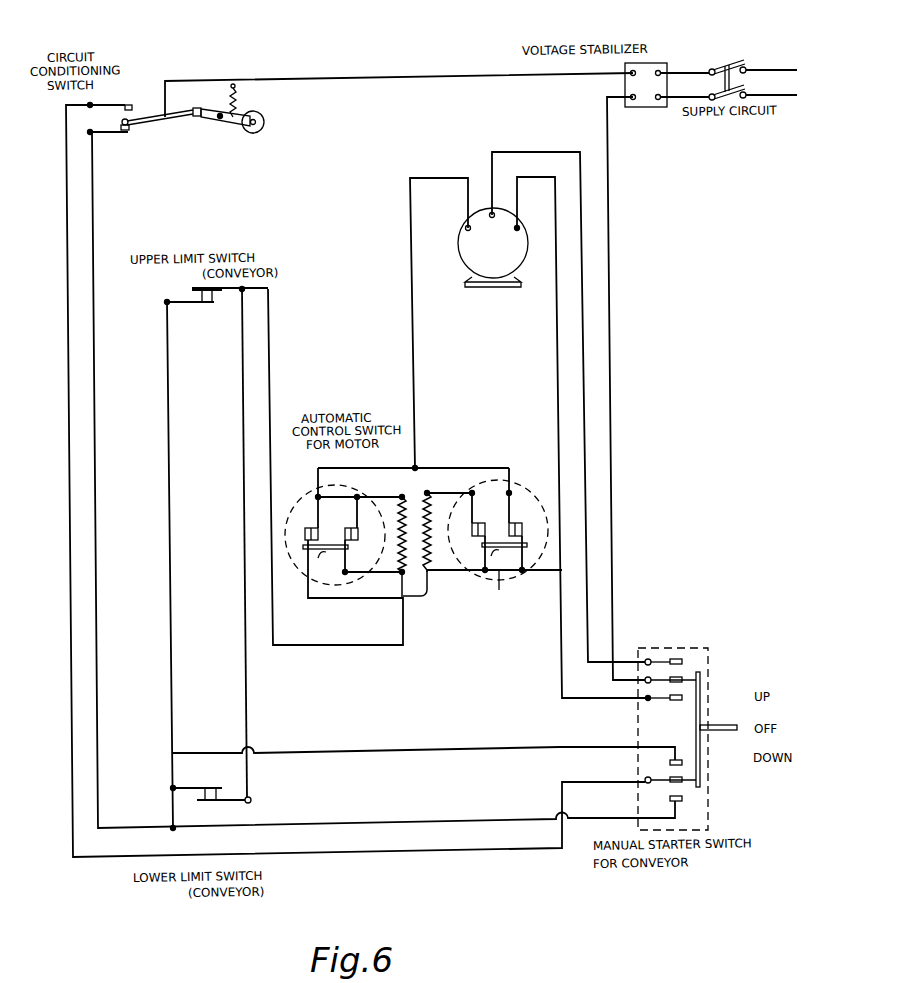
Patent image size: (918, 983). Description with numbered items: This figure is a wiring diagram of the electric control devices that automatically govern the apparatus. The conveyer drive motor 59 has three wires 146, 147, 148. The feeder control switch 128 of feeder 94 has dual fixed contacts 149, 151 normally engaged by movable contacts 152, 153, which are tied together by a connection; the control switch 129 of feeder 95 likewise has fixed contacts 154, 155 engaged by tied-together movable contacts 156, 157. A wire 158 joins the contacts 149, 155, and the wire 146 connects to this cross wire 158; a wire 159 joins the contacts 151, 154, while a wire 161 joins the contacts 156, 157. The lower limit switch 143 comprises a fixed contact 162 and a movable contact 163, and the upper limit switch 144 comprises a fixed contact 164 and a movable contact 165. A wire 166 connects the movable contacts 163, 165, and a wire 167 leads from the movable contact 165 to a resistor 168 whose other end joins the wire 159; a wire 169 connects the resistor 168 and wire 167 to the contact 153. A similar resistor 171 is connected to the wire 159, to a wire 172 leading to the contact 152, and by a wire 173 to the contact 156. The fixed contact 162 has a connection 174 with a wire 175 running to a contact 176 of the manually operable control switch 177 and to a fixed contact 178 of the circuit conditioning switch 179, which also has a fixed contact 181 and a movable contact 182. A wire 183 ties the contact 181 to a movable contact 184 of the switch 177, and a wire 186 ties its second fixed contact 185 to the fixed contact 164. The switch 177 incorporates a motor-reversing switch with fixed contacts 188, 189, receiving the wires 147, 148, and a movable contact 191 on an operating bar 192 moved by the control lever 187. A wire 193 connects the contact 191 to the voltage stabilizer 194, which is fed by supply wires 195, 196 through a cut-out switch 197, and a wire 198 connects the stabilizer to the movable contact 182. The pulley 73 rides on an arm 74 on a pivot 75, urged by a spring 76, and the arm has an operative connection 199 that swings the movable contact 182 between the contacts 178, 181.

The conveyer drive motor 59 is at (497, 266).
The pulley 73 is at (264, 121).
The arm 74 is at (244, 130).
The pivot 75 is at (220, 119).
The spring 76 is at (238, 102).
The feeder 94 is at (321, 668).
The feeder 95 is at (462, 626).
The feeder control switch 128 is at (293, 506).
The control switch 129 is at (518, 580).
The lower limit switch 143 is at (193, 782).
The upper limit switch 144 is at (210, 304).
The wire 146 is at (450, 176).
The wire 147 is at (521, 152).
The wire 148 is at (537, 178).
The fixed contact 149 is at (320, 520).
The fixed contact 151 is at (357, 536).
The movable contact 152 is at (304, 549).
The movable contact 153 is at (348, 549).
The fixed contact 154 is at (470, 496).
The fixed contact 155 is at (512, 496).
The movable contact 156 is at (471, 548).
The movable contact 157 is at (532, 545).
The wire 158 is at (488, 467).
The wire 159 is at (389, 496).
The wire 161 is at (500, 588).
The fixed contact 162 is at (214, 788).
The movable contact 163 is at (238, 803).
The fixed contact 164 is at (185, 303).
The movable contact 165 is at (196, 287).
The wire 166 is at (247, 663).
The wire 167 is at (270, 358).
The resistor 168 is at (408, 510).
The wire 169 is at (362, 574).
The resistor 171 is at (430, 532).
The wire 172 is at (412, 598).
The wire 173 is at (447, 575).
The connection 174 is at (172, 808).
The wire 175 is at (96, 232).
The contact 176 is at (682, 798).
The manually operable control switch 177 is at (723, 783).
The fixed contact 178 is at (133, 130).
The circuit conditioning switch 179 is at (143, 128).
The fixed contact 181 is at (132, 103).
The movable contact 182 is at (151, 117).
The wire 183 is at (66, 282).
The movable contact 184 is at (660, 783).
The second fixed contact 185 is at (677, 760).
The wire 186 is at (478, 748).
The control lever 187 is at (733, 724).
The fixed contact 188 is at (682, 656).
The fixed contact 189 is at (660, 699).
The movable contact 191 is at (700, 676).
The operating bar 192 is at (700, 690).
The wire 193 is at (612, 538).
The voltage stabilizer 194 is at (647, 88).
The wire 195 is at (782, 93).
The wire 196 is at (781, 68).
The cut-out switch 197 is at (739, 59).
The wire 198 is at (428, 77).
The operative connection 199 is at (198, 108).